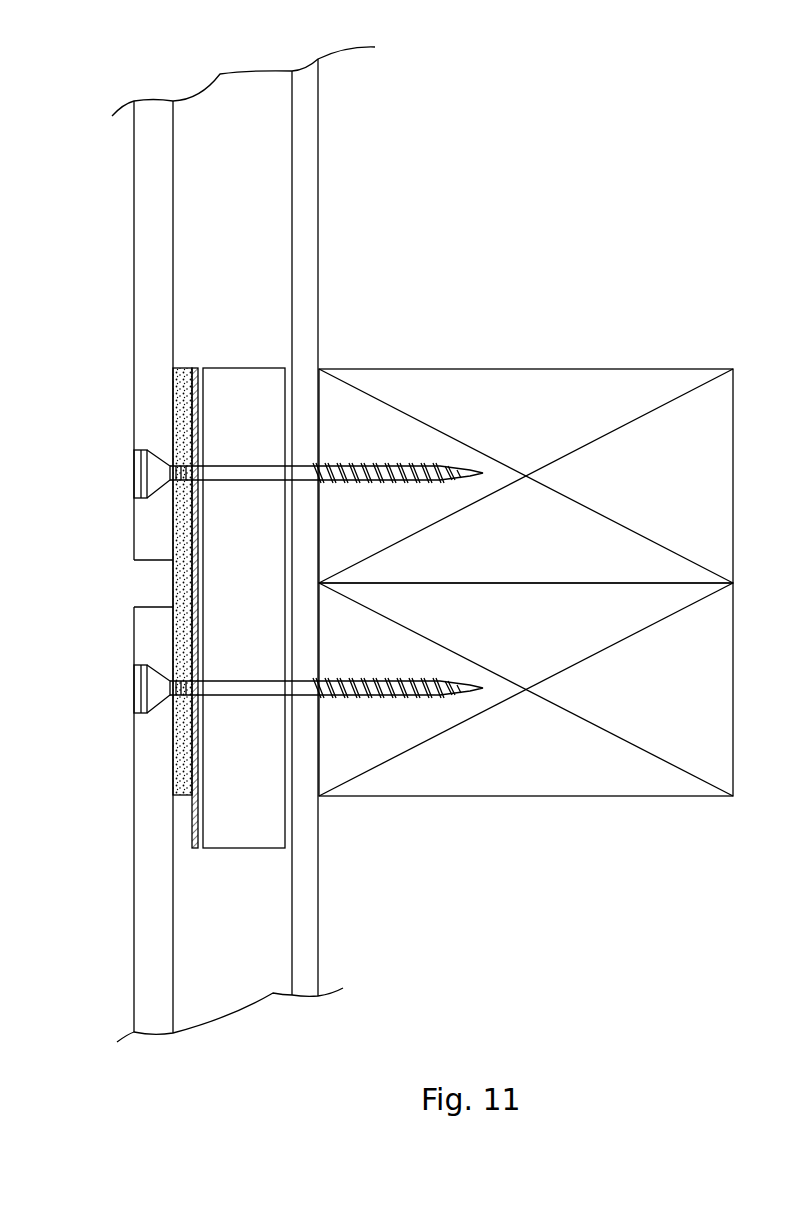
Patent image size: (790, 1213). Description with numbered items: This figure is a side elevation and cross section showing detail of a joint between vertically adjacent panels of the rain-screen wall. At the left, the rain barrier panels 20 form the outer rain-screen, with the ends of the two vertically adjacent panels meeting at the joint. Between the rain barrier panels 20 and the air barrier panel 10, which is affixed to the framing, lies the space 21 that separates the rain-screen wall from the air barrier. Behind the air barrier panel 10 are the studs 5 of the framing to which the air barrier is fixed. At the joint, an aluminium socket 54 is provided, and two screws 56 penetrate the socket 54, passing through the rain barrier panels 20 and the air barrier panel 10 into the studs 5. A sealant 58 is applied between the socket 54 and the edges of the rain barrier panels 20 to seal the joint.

The stud 5 is at (528, 430).
The air barrier panel 10 is at (308, 310).
The rain barrier panel 20 is at (167, 228).
The space 21 is at (254, 325).
The aluminium socket 54 is at (190, 838).
The screw 56 is at (232, 463).
The sealant 58 is at (192, 627).